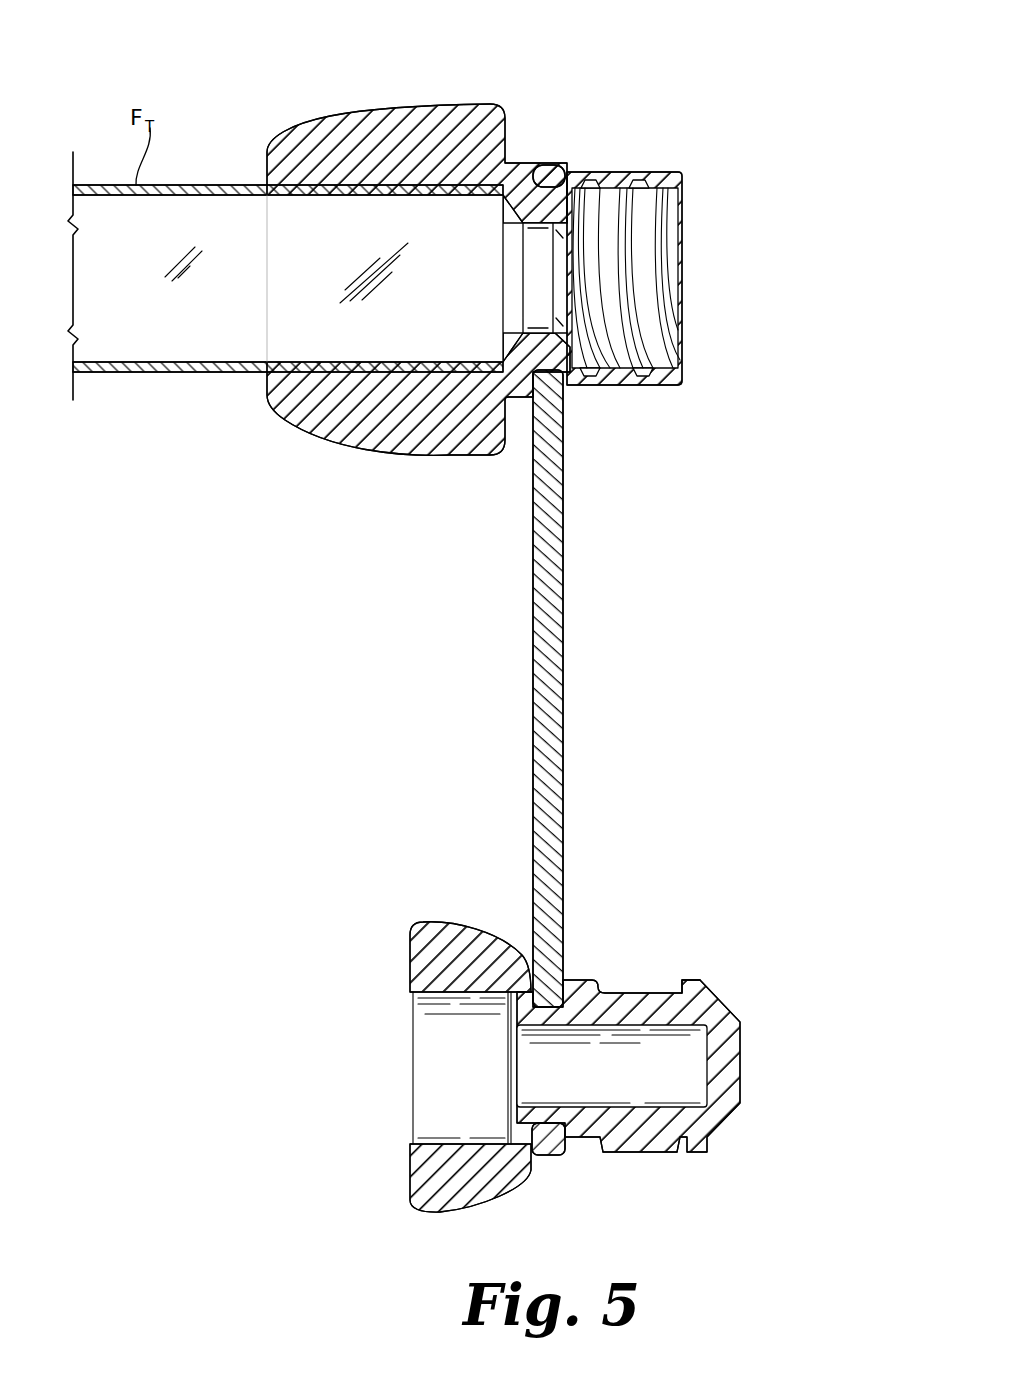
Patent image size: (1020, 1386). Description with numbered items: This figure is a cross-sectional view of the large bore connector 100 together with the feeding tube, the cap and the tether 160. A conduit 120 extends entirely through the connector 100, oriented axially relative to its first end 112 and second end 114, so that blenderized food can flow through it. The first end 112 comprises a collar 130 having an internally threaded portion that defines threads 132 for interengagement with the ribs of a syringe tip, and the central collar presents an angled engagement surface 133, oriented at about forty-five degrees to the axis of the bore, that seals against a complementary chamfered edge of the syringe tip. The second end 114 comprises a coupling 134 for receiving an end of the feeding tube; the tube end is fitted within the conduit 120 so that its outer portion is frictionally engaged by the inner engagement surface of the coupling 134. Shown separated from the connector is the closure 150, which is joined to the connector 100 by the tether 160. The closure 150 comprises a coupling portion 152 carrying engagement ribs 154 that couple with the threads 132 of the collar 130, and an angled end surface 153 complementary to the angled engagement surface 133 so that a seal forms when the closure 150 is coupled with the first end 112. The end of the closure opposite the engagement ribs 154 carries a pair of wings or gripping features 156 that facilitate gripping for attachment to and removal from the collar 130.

The connector 100 is at (590, 88).
The first end 112 is at (722, 212).
The second end 114 is at (233, 428).
The conduit 120 is at (302, 278).
The collar 130 is at (660, 243).
The threads 132 is at (630, 285).
The angled engagement surface 133 is at (572, 330).
The coupling 134 is at (351, 458).
The closure 150 is at (362, 1183).
The coupling portion 152 is at (715, 940).
The angled end surface 153 is at (727, 1007).
The engagement ribs 154 is at (697, 985).
The gripping features 156 is at (473, 945).
The tether 160 is at (550, 680).